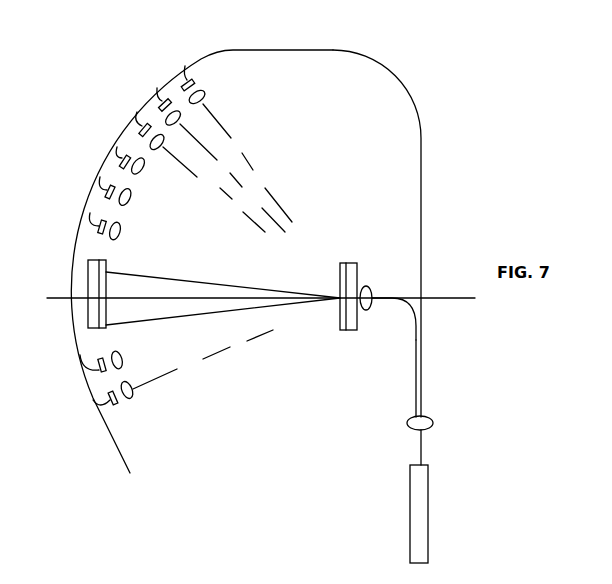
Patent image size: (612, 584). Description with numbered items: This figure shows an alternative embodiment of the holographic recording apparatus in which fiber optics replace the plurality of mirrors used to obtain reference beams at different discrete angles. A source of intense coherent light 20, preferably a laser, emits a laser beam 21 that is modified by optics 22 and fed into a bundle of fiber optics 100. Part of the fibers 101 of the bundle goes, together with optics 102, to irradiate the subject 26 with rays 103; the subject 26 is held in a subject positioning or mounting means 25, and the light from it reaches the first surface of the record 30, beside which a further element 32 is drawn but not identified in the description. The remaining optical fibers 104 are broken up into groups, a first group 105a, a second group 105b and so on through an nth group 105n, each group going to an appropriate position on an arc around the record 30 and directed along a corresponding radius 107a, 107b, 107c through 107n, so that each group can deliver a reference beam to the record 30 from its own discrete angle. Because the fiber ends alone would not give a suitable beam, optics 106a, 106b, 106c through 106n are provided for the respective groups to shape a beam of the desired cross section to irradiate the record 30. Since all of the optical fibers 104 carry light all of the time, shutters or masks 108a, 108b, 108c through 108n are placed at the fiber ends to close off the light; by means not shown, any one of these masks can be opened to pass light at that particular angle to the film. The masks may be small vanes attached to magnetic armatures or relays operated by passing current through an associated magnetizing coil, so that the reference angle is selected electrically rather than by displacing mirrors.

The source of intense coherent light 20 is at (428, 503).
The laser beam 21 is at (422, 447).
The optics 22 is at (435, 423).
The subject positioning or mounting means 25 is at (88, 280).
The subject 26 is at (106, 278).
The record 30 is at (338, 290).
The lens element 32 is at (357, 270).
The bundle of fiber optics 100 is at (421, 373).
The fibers 101 is at (410, 312).
The optics 102 is at (369, 292).
The rays 103 is at (195, 314).
The optical fibers 104 is at (421, 238).
The fiber group 105a is at (185, 65).
The fiber group 105b is at (157, 88).
The fiber group 105n is at (93, 400).
The optics 106a is at (207, 89).
The optics 106b is at (185, 115).
The optics 106c is at (158, 150).
The optics 106n is at (128, 400).
The radius 107a is at (231, 138).
The radius 107b is at (218, 160).
The radius 107c is at (226, 189).
The radius 107n is at (176, 372).
The shutter or mask 108a is at (190, 80).
The shutter or mask 108b is at (160, 106).
The shutter or mask 108c is at (141, 131).
The shutter or mask 108n is at (115, 403).